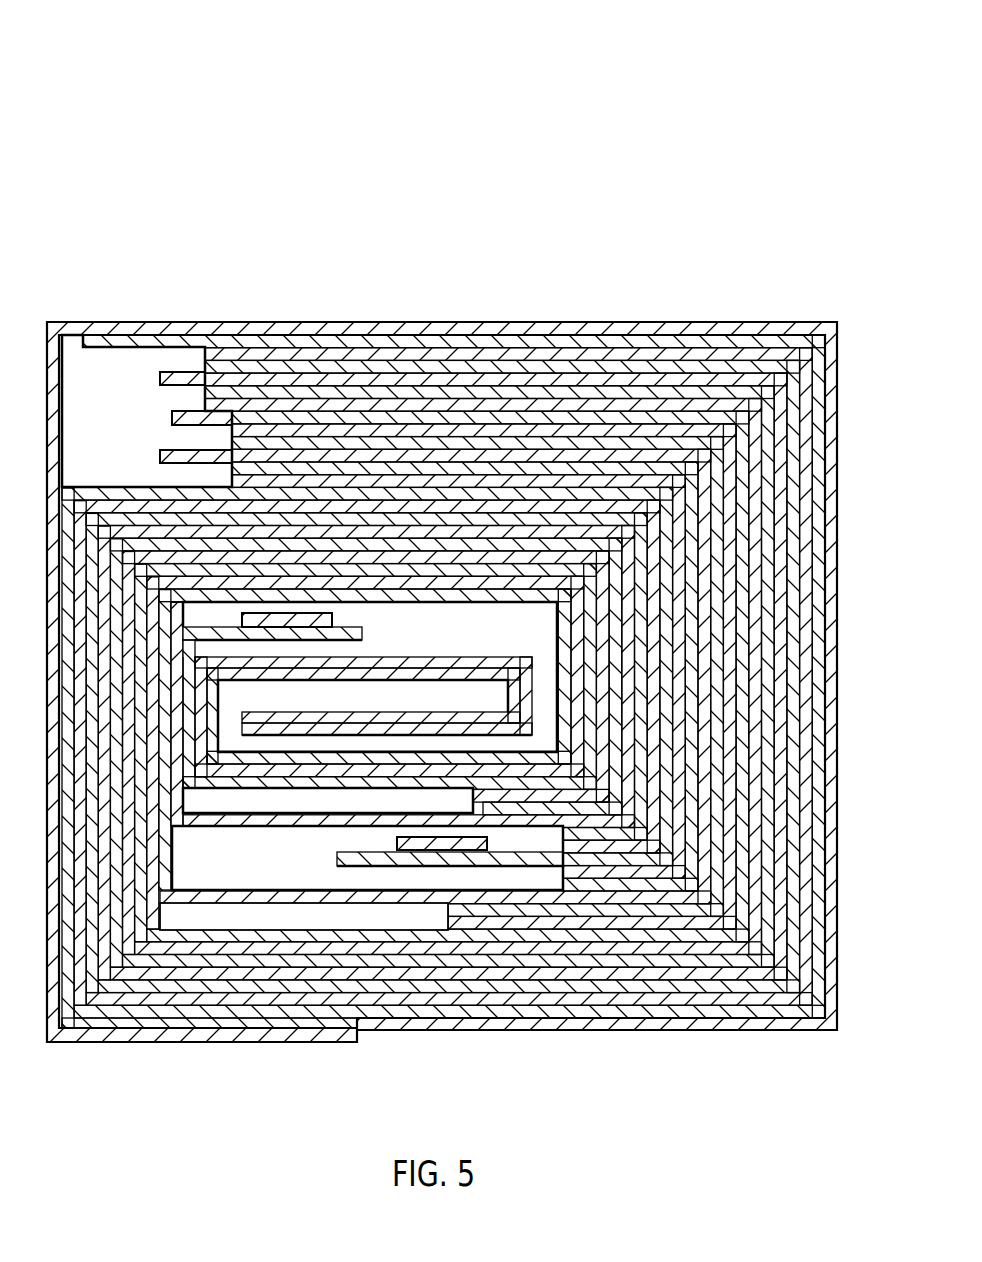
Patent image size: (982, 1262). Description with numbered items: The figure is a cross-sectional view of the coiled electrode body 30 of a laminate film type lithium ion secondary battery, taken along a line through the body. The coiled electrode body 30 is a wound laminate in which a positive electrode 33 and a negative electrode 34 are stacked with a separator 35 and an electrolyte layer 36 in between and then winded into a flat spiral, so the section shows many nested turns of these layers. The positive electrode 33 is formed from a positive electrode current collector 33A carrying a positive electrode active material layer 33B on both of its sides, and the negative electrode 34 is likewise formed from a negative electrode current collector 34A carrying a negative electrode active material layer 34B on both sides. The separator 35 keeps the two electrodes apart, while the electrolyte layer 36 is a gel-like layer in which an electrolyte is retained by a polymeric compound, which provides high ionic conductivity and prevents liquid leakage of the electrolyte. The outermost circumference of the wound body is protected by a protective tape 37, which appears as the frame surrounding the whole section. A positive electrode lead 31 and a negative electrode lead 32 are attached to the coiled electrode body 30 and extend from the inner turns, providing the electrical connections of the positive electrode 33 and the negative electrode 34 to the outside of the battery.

The coiled electrode body 30 is at (614, 121).
The positive electrode lead 31 is at (263, 622).
The negative electrode lead 32 is at (435, 845).
The positive electrode 33 is at (272, 198).
The positive electrode current collector 33A is at (197, 415).
The positive electrode active material layer 33B is at (270, 433).
The negative electrode 34 is at (532, 198).
The negative electrode current collector 34A is at (382, 345).
The negative electrode active material layer 34B is at (512, 480).
The separator 35 is at (622, 380).
The electrolyte layer 36 is at (690, 470).
The protective tape 37 is at (790, 330).